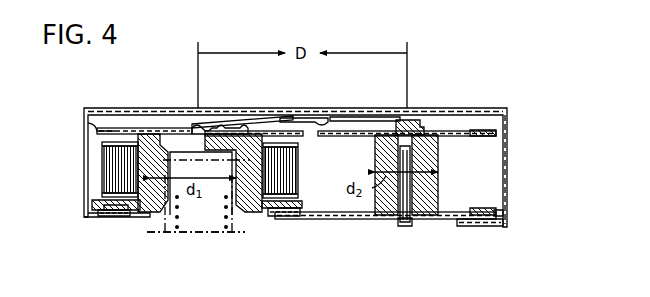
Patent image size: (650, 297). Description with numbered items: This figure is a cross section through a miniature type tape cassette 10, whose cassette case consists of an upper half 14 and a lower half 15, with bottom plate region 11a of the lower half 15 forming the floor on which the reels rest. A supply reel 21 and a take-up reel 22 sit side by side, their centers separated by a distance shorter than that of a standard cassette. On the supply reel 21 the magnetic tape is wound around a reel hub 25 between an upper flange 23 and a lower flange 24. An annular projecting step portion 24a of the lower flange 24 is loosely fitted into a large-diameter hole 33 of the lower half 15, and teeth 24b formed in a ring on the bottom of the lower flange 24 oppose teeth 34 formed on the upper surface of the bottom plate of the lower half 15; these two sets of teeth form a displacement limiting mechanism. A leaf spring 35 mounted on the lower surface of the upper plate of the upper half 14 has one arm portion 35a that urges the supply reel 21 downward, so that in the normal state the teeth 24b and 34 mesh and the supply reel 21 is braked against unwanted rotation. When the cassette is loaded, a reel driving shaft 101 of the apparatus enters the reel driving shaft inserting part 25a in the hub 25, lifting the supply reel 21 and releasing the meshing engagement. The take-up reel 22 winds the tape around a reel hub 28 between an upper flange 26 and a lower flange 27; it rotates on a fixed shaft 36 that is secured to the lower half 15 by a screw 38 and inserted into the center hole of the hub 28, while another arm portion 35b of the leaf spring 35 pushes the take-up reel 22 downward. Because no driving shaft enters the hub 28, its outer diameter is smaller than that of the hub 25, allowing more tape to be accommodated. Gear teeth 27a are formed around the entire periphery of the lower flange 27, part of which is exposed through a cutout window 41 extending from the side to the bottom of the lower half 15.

The tape cassette 10 is at (110, 89).
The base plate 11a is at (338, 220).
The upper half 14 is at (507, 140).
The lower half 15 is at (102, 195).
The supply reel 21 is at (134, 124).
The take-up reel 22 is at (456, 128).
The upper flange 23 is at (88, 124).
The lower flange 24 is at (92, 203).
The annular projecting step portion 24a is at (155, 212).
The teeth 24b is at (100, 216).
The reel hub 25 is at (292, 168).
The reel driving shaft inserting part 25a is at (240, 220).
The upper flange 26 is at (492, 130).
The lower flange 27 is at (488, 208).
The gear teeth 27a is at (503, 212).
The reel hub 28 is at (378, 160).
The hole 33 is at (252, 214).
The teeth 34 is at (116, 210).
The leaf spring 35 is at (280, 118).
The arm portion 35a is at (220, 124).
The arm portion 35b is at (398, 117).
The fixed shaft 36 is at (432, 162).
The screw 38 is at (404, 226).
The cutout window 41 is at (498, 226).
The reel driving shaft 101 is at (170, 235).